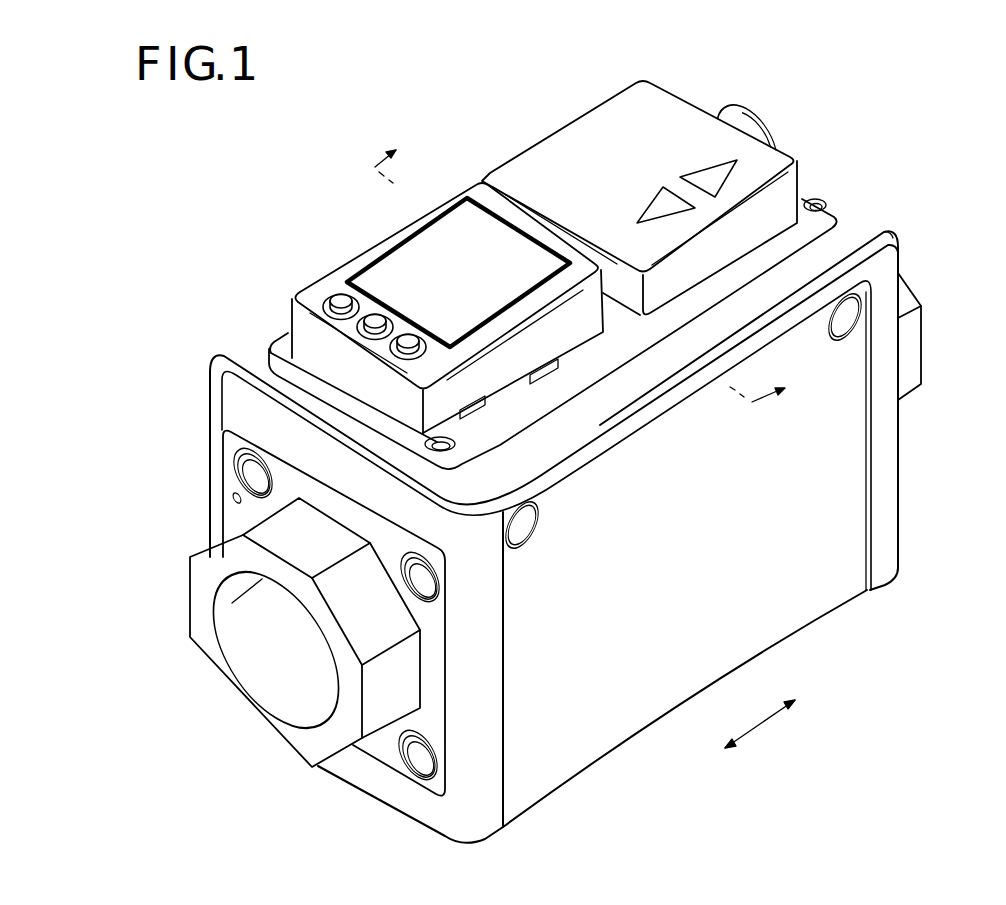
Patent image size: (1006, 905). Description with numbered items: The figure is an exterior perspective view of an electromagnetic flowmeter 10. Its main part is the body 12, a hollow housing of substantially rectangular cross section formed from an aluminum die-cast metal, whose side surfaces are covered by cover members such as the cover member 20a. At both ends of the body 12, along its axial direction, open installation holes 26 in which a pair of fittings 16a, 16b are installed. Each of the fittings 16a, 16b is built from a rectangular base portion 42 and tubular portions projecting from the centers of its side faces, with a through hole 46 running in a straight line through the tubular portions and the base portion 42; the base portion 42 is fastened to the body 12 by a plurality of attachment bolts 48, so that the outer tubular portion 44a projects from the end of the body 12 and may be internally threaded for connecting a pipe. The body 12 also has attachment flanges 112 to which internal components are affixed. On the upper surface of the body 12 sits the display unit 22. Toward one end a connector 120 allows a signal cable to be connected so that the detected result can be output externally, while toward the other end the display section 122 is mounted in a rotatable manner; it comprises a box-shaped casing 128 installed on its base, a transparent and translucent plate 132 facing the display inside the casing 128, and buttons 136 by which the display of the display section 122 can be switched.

The electromagnetic flowmeter 10 is at (888, 108).
The body 12 is at (905, 493).
The fitting 16a is at (910, 338).
The fitting 16b is at (261, 744).
The cover member 20a is at (609, 718).
The display unit 22 is at (340, 242).
The installation hole 26 is at (430, 650).
The base portion 42 is at (382, 747).
The tubular portion 44a is at (207, 624).
The through hole 46 is at (262, 657).
The attachment bolt 48 is at (262, 475).
The attachment flange 112 is at (867, 228).
The connector 120 is at (735, 112).
The display section 122 is at (416, 253).
The casing 128 is at (307, 332).
The transparent and translucent plate 132 is at (473, 240).
The button 136 is at (338, 296).